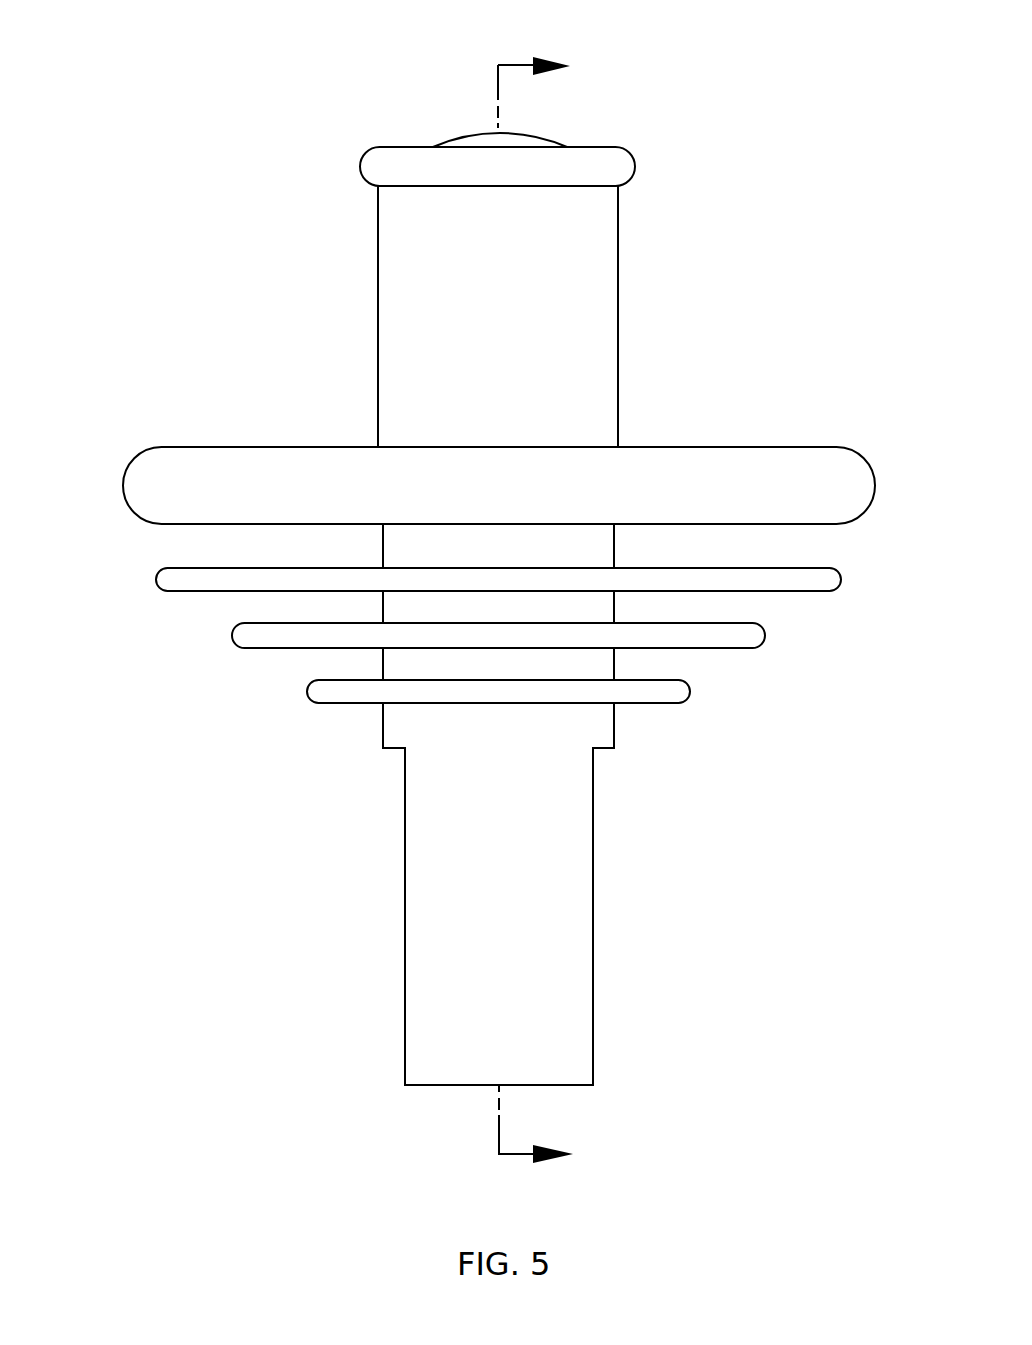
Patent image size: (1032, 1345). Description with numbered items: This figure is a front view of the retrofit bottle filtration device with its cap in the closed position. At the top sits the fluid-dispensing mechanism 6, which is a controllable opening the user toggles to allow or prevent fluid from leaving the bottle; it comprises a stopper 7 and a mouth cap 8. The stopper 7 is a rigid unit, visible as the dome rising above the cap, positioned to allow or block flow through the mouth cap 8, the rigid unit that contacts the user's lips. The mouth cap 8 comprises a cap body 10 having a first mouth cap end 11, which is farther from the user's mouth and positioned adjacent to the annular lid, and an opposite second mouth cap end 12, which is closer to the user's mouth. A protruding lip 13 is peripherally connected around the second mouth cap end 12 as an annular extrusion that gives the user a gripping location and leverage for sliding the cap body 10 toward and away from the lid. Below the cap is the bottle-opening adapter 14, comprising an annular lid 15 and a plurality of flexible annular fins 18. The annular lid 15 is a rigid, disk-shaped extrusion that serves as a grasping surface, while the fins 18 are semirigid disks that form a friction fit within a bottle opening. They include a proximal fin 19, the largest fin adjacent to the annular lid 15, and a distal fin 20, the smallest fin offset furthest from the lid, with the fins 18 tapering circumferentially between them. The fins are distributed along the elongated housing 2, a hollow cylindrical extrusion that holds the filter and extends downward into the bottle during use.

The elongated housing 2 is at (423, 923).
The fluid-dispensing mechanism 6 is at (872, 287).
The stopper 7 is at (464, 142).
The mouth cap 8 is at (505, 98).
The cap body 10 is at (513, 322).
The first mouth cap end 11 is at (638, 392).
The second mouth cap end 12 is at (636, 238).
The protruding lip 13 is at (627, 169).
The bottle-opening adapter 14 is at (386, 316).
The annular lid 15 is at (842, 472).
The plurality of flexible annular fins 18 is at (462, 679).
The proximal fin 19 is at (188, 585).
The distal fin 20 is at (337, 697).